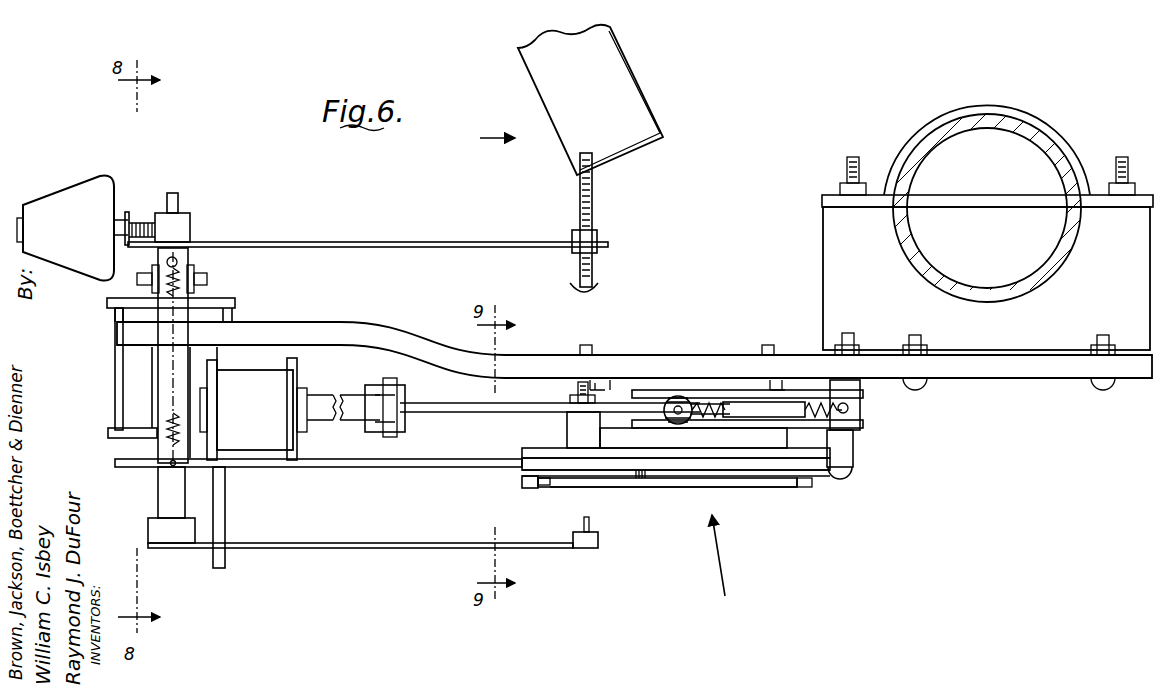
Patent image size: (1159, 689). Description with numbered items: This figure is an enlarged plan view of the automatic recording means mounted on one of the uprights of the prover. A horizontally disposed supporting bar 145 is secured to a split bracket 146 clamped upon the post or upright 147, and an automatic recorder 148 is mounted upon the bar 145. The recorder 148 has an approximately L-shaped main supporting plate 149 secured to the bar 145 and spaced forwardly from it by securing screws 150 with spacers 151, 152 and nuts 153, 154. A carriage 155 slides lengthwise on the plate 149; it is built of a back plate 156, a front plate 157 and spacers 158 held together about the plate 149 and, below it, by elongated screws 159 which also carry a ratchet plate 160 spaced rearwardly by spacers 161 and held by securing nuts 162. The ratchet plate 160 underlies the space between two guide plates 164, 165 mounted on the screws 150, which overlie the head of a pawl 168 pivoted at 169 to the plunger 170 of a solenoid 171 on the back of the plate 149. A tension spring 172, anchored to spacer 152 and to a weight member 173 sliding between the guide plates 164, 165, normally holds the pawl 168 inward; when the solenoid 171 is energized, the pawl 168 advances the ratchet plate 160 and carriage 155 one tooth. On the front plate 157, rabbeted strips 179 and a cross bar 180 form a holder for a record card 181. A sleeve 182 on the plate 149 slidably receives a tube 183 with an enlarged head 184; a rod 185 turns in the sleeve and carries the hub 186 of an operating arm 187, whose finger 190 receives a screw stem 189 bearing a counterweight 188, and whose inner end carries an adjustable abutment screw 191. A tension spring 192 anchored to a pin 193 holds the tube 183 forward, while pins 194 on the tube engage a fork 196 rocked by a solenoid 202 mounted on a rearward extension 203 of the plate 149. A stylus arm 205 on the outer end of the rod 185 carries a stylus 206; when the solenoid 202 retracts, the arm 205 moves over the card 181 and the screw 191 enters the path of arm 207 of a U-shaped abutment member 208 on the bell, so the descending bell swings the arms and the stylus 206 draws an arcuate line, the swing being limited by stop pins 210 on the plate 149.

The supporting bar 145 is at (1038, 380).
The split bracket 146 is at (1005, 333).
The post or upright 147 is at (960, 122).
The automatic recorder 148 is at (750, 606).
The main supporting plate 149 is at (382, 468).
The securing screws 150 is at (845, 480).
The spacers 151 is at (852, 445).
The spacers 152 is at (850, 408).
The nuts 153 is at (850, 380).
The nuts 154 is at (848, 333).
The carriage 155 is at (515, 487).
The back plate 156 is at (532, 450).
The front plate 157 is at (525, 475).
The spacers 158 is at (530, 462).
The elongated screws 159 is at (588, 345).
The ratchet plate 160 is at (745, 402).
The spacers 161 is at (590, 433).
The securing nuts 162 is at (570, 398).
The guide plate 164 is at (865, 425).
The guide plate 165 is at (865, 397).
The pawl 168 is at (490, 414).
The pivot 169 is at (392, 383).
The plunger 170 is at (352, 397).
The solenoid 171 is at (275, 440).
The tension spring 172 is at (825, 405).
The weight member 173 is at (675, 396).
The rabbeted strip 179 is at (535, 487).
The cross bar 180 is at (665, 487).
The record card 181 is at (738, 488).
The sleeve 182 is at (158, 352).
The tube 183 is at (178, 485).
The enlarged head 184 is at (160, 537).
The rod 185 is at (175, 197).
The hub 186 is at (183, 228).
The operating arm 187 is at (403, 242).
The counterweight 188 is at (40, 205).
The screw stem 189 is at (144, 222).
The finger 190 is at (127, 212).
The screw 191 is at (592, 204).
The tension spring 192 is at (194, 290).
The pin 193 is at (178, 262).
The pins 194 is at (207, 277).
The fork 196 is at (150, 293).
The solenoid 202 is at (118, 380).
The rearward extension 203 is at (240, 318).
The stylus arm 205 is at (390, 548).
The stylus 206 is at (590, 548).
The arm 207 is at (612, 40).
The abutment member 208 is at (494, 130).
The stop pins 210 is at (220, 558).